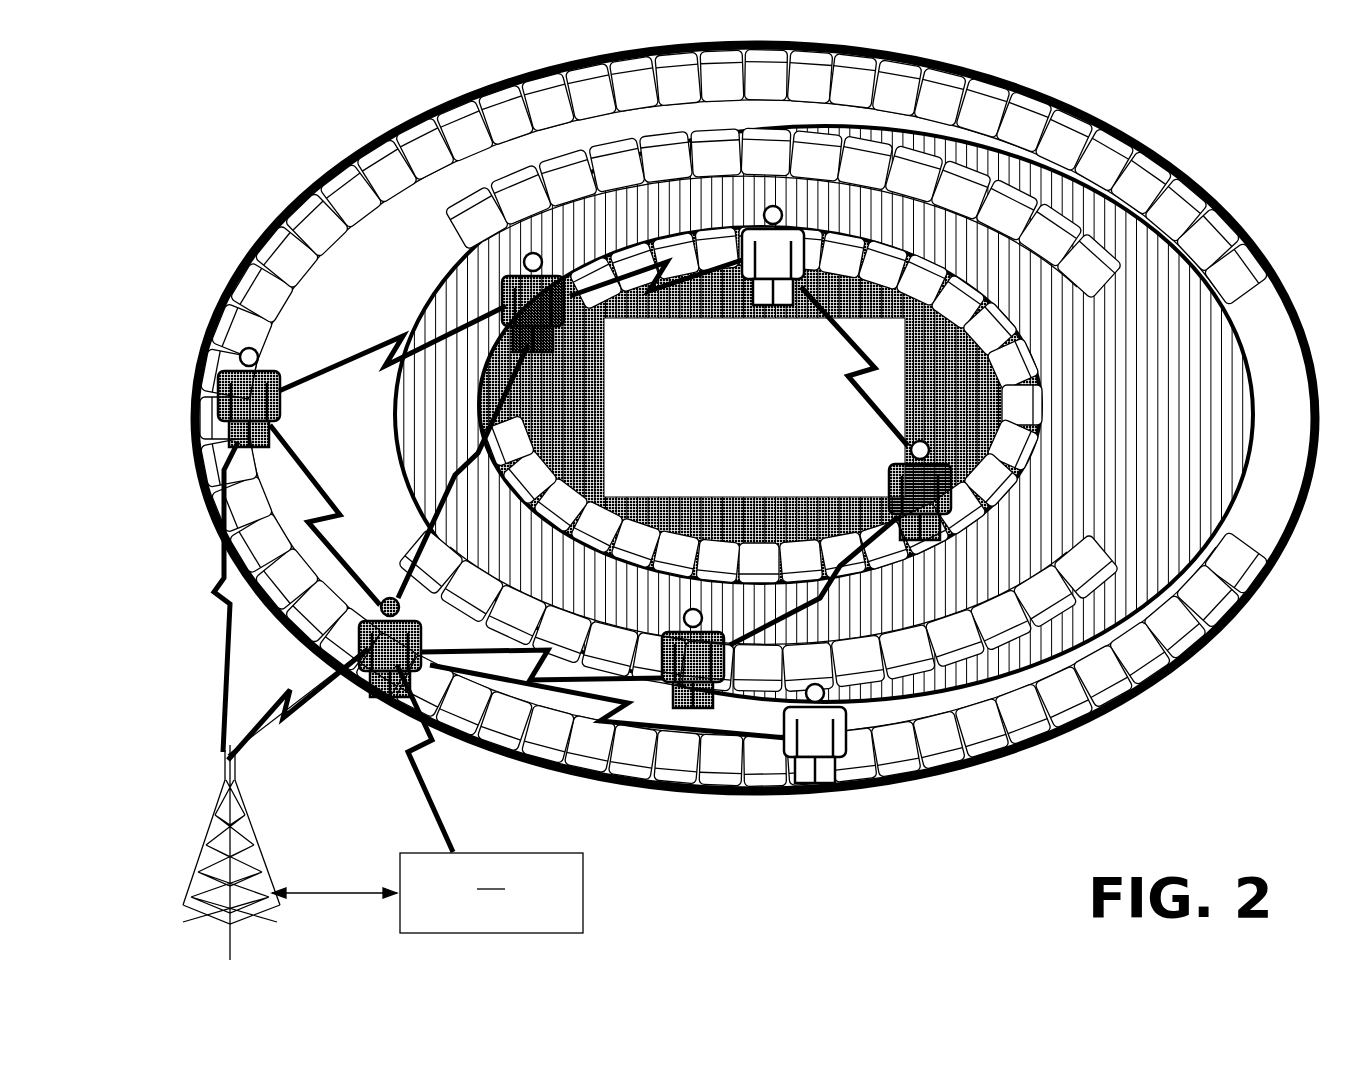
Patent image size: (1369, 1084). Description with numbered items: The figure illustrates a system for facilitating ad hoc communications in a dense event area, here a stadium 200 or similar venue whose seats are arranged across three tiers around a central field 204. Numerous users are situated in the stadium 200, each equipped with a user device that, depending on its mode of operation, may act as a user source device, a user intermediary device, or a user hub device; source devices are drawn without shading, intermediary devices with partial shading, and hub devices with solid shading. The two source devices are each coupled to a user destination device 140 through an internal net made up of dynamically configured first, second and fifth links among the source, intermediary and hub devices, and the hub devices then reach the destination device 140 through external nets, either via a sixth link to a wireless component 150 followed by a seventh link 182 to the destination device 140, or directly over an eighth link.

The user destination device 140 is at (491, 893).
The wireless component 150 is at (249, 829).
The seventh link 182 is at (351, 893).
The stadium 200 is at (1192, 163).
The field 204 is at (766, 416).